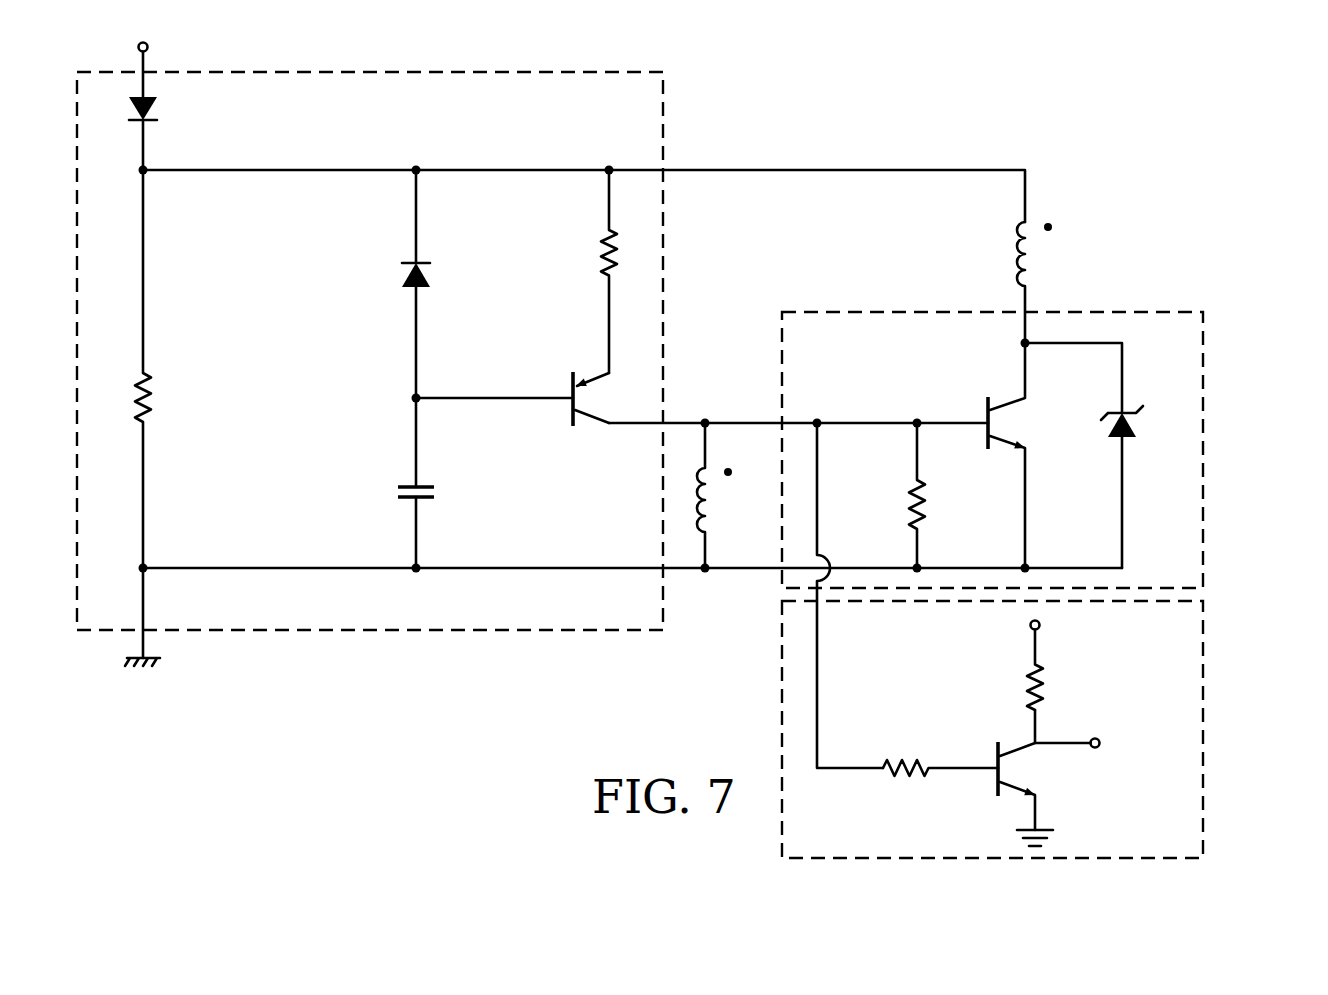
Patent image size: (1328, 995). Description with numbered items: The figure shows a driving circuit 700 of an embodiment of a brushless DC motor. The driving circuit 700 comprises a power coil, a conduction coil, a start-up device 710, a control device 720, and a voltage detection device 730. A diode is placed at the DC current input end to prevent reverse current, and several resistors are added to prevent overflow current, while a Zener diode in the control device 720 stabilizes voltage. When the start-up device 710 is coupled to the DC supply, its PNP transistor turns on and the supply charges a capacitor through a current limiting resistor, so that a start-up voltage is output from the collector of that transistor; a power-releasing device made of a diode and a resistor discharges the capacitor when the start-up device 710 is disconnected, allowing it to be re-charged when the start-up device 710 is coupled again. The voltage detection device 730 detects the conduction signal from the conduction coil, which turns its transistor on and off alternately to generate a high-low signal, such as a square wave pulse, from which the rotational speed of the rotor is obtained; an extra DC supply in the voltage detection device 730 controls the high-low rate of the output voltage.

The driving circuit 700 is at (1258, 88).
The start-up device 710 is at (663, 118).
The control device 720 is at (1203, 360).
The voltage detection device 730 is at (1203, 648).